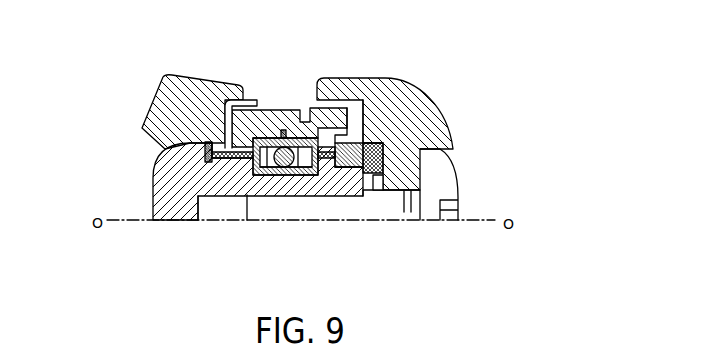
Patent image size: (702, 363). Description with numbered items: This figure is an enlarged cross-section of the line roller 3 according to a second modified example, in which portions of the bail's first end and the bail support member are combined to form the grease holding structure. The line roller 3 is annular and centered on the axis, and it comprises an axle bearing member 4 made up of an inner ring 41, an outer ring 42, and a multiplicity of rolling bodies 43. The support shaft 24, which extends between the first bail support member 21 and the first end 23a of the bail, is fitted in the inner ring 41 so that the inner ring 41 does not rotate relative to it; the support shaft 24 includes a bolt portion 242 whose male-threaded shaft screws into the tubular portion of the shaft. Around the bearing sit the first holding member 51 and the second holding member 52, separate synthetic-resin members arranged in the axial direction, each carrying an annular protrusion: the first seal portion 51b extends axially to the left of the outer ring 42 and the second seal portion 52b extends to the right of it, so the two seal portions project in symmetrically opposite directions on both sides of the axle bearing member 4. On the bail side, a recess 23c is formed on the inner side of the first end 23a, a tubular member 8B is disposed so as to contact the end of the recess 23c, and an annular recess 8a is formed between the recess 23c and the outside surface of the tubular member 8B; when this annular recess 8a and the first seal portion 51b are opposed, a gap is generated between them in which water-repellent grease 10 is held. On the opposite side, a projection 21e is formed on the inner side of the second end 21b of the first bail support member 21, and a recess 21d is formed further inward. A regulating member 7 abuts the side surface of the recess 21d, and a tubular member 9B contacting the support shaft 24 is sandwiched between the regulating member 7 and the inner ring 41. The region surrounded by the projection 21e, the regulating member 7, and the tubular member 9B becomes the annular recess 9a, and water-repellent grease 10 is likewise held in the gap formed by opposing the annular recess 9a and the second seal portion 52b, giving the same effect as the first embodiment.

The line roller 3 is at (290, 40).
The axle bearing member 4 is at (264, 275).
The regulating member 7 is at (377, 175).
The annular recess 8a is at (198, 197).
The tubular member 8B is at (226, 175).
The annular recess 9a is at (361, 172).
The tubular member 9B is at (342, 172).
The water-repellent grease 10 is at (215, 162).
The first bail support member 21 is at (452, 40).
The second end 21b is at (417, 100).
The recess 21d is at (370, 143).
The projection 21e is at (354, 127).
The first end 23a is at (198, 77).
The recess 23c is at (207, 146).
The support shaft 24 is at (153, 205).
The inner ring 41 is at (306, 172).
The outer ring 42 is at (263, 168).
The rolling bodies 43 is at (284, 168).
The first holding member 51 is at (250, 110).
The first seal portion 51b is at (222, 155).
The second holding member 52 is at (285, 130).
The second seal portion 52b is at (385, 148).
The bolt portion 242 is at (458, 178).